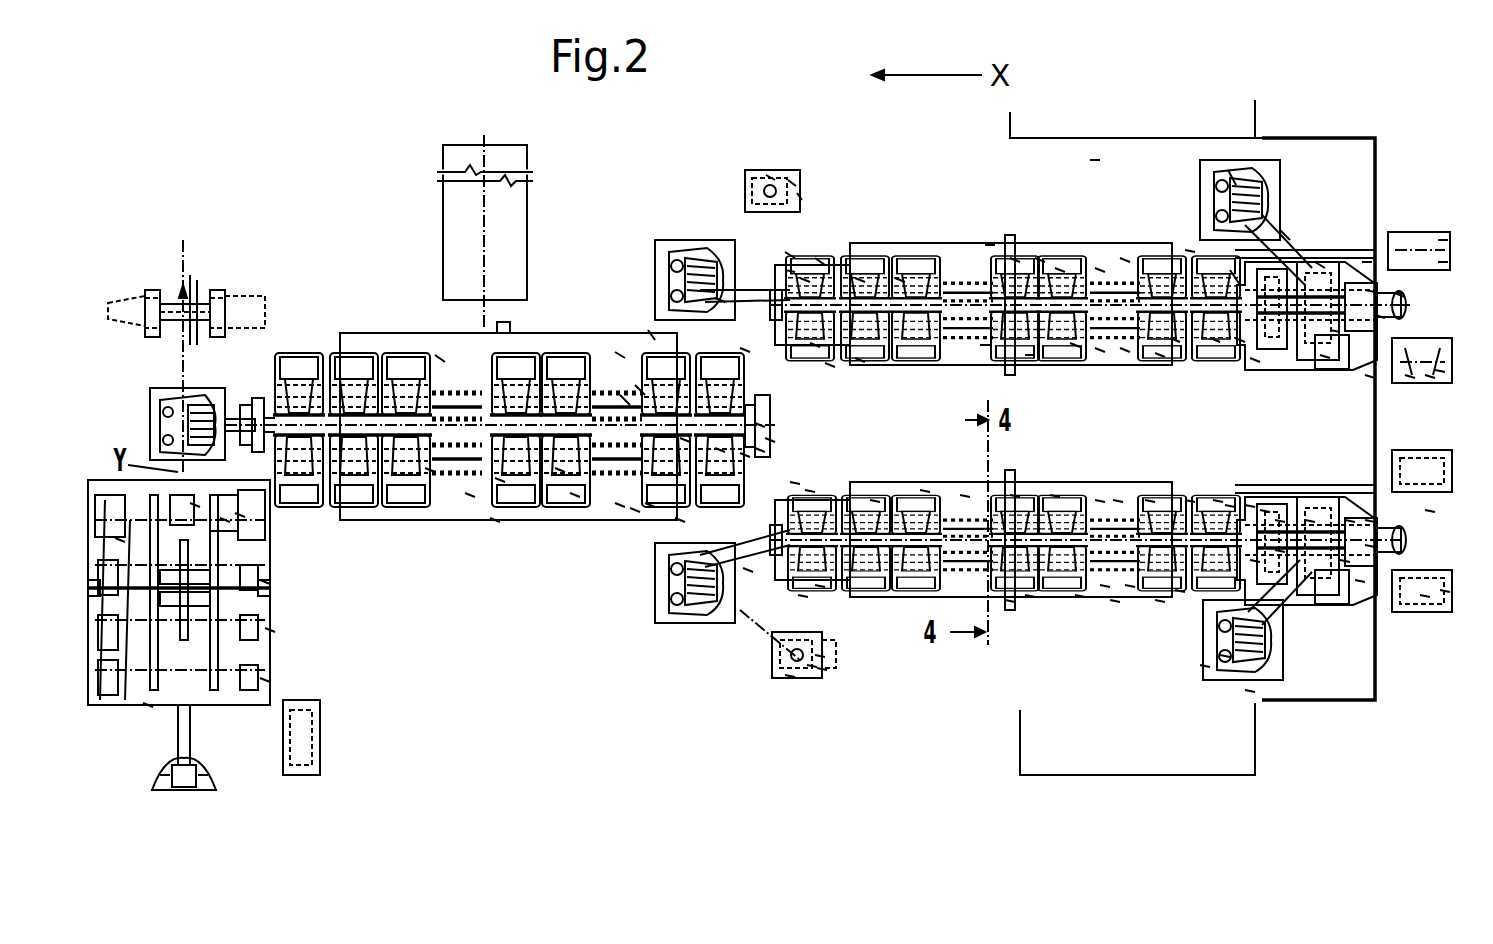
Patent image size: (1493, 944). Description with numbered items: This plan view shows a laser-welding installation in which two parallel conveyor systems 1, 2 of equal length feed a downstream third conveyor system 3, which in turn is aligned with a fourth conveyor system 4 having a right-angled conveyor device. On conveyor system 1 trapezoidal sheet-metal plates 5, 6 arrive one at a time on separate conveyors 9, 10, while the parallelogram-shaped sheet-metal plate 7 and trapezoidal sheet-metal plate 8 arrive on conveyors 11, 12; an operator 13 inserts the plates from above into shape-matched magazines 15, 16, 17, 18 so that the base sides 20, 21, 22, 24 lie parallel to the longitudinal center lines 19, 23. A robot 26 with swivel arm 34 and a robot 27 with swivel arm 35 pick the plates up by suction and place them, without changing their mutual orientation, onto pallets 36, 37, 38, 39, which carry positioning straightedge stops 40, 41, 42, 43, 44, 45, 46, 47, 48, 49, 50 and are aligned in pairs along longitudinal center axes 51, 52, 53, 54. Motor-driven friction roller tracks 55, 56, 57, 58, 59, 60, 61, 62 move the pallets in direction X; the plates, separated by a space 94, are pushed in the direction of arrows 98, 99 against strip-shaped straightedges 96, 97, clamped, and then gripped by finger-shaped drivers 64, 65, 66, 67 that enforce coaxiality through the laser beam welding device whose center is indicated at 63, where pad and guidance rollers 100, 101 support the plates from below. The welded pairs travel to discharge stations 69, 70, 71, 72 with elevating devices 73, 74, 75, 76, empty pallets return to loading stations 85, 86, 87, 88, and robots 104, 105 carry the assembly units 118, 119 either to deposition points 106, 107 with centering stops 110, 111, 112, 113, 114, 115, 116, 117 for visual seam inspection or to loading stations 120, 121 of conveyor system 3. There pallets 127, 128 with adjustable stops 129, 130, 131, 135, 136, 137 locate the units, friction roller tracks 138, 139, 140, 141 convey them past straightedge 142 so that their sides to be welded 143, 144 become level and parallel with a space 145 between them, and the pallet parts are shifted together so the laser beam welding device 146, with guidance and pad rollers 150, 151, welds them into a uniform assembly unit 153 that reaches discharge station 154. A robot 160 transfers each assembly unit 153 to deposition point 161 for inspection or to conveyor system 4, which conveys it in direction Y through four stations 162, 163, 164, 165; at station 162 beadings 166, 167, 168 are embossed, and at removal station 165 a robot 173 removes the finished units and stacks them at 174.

The conveyor system 1 is at (1095, 158).
The conveyor system 2 is at (965, 493).
The third conveyor system 3 is at (566, 322).
The fourth conveyor system 4 is at (112, 474).
The sheet-metal plate 5 is at (1412, 245).
The sheet-metal plate 6 is at (1440, 370).
The sheet-metal plate 7 is at (1370, 520).
The sheet-metal plate 8 is at (1425, 595).
The conveyor 9 is at (1440, 262).
The conveyor 10 is at (1430, 375).
The conveyor 11 is at (1440, 470).
The conveyor 12 is at (1445, 590).
The operator 13 is at (1400, 295).
The magazine 15 is at (1440, 240).
The magazine 16 is at (1380, 315).
The magazine 17 is at (1370, 375).
The magazine 18 is at (1360, 580).
The longitudinal center line 19 is at (1405, 305).
The base side 20 is at (1368, 262).
The base side 21 is at (1325, 355).
The base side 22 is at (1350, 520).
The longitudinal center line 23 is at (1370, 545).
The base side 24 is at (1430, 575).
The robot 26 is at (1300, 278).
The robot 27 is at (1205, 665).
The swivel arm 34 is at (1210, 268).
The swivel arm 35 is at (1250, 690).
The pallet 36 is at (1248, 198).
The pallet 37 is at (1255, 360).
The pallet 38 is at (1280, 520).
The pallet 39 is at (1255, 560).
The straightedge stop 40 is at (1320, 265).
The straightedge stop 41 is at (1232, 170).
The straightedge stop 42 is at (1440, 355).
The straightedge stop 43 is at (1215, 340).
The straightedge stop 44 is at (1240, 340).
The straightedge stop 45 is at (1250, 505).
The straightedge stop 46 is at (1265, 510).
The straightedge stop 47 is at (1310, 520).
The straightedge stop 48 is at (1280, 550).
The straightedge stop 49 is at (1180, 590).
The straightedge stop 50 is at (1250, 640).
The longitudinal center axis 51 is at (1218, 500).
The longitudinal center axis 52 is at (1160, 355).
The longitudinal center axis 53 is at (1130, 585).
The longitudinal center axis 54 is at (1225, 655).
The friction roller track 55 is at (1100, 268).
The friction roller track 56 is at (1060, 268).
The friction roller track 57 is at (1075, 345).
The friction roller track 58 is at (1100, 350).
The friction roller track 59 is at (1118, 500).
The friction roller track 60 is at (1100, 500).
The friction roller track 61 is at (1080, 595).
The friction roller track 62 is at (1105, 585).
The center of laser beam welding device 63 is at (990, 245).
The finger-shaped driver 64 is at (1040, 258).
The finger-shaped driver 65 is at (1030, 355).
The finger-shaped driver 66 is at (1055, 495).
The finger-shaped driver 67 is at (1030, 595).
The discharge station 69 is at (820, 262).
The discharge station 70 is at (815, 345).
The discharge station 71 is at (795, 482).
The discharge station 72 is at (803, 596).
The elevating device 73 is at (720, 300).
The elevating device 74 is at (860, 280).
The elevating device 75 is at (875, 500).
The elevating device 76 is at (820, 585).
The loading station 85 is at (1190, 248).
The loading station 86 is at (1175, 340).
The loading station 87 is at (1190, 498).
The loading station 88 is at (1160, 600).
The space 94 is at (1370, 290).
The straightedge 96 is at (1125, 350).
The straightedge 97 is at (1115, 600).
The arrow 98 is at (1125, 258).
The arrow 99 is at (1150, 500).
The pad and guidance roller 100 is at (985, 345).
The pad and guidance roller 101 is at (1015, 258).
The robot 104 is at (790, 255).
The robot 105 is at (736, 600).
The deposition point 106 is at (785, 168).
The deposition point 107 is at (822, 648).
The centering stop 110 is at (792, 180).
The centering stop 111 is at (770, 175).
The centering stop 112 is at (800, 196).
The centering stop 113 is at (790, 270).
The centering stop 114 is at (822, 668).
The centering stop 115 is at (820, 655).
The centering stop 116 is at (812, 665).
The centering stop 117 is at (790, 675).
The assembly unit 118 is at (652, 335).
The assembly unit 119 is at (760, 425).
The loading station 120 is at (745, 350).
The loading station 121 is at (748, 570).
The pallet 127 is at (738, 292).
The pallet 128 is at (810, 490).
The stop 129 is at (830, 365).
The stop 130 is at (685, 440).
The stop 131 is at (805, 280).
The stop 135 is at (720, 450).
The stop 136 is at (760, 450).
The stop 137 is at (770, 440).
The friction roller track 138 is at (625, 400).
The friction roller track 139 is at (640, 390).
The friction roller track 140 is at (430, 470).
The friction roller track 141 is at (620, 505).
The straightedge 142 is at (635, 510).
The side to be welded 143 is at (603, 335).
The side to be welded 144 is at (560, 470).
The space 145 is at (500, 480).
The laser beam welding device 146 is at (495, 520).
The guidance and pad roller 150 is at (520, 366).
The guidance and pad roller 151 is at (470, 495).
The uniform assembly unit 153 is at (280, 378).
The discharge station 154 is at (308, 345).
The robot 160 is at (208, 392).
The deposition point 161 is at (216, 290).
The station 162 is at (225, 520).
The station 163 is at (265, 582).
The station 164 is at (270, 630).
The station 165 is at (265, 680).
The beading 166 is at (120, 540).
The beading 167 is at (195, 505).
The beading 168 is at (240, 515).
The robot 173 is at (205, 765).
The stack 174 is at (320, 722).